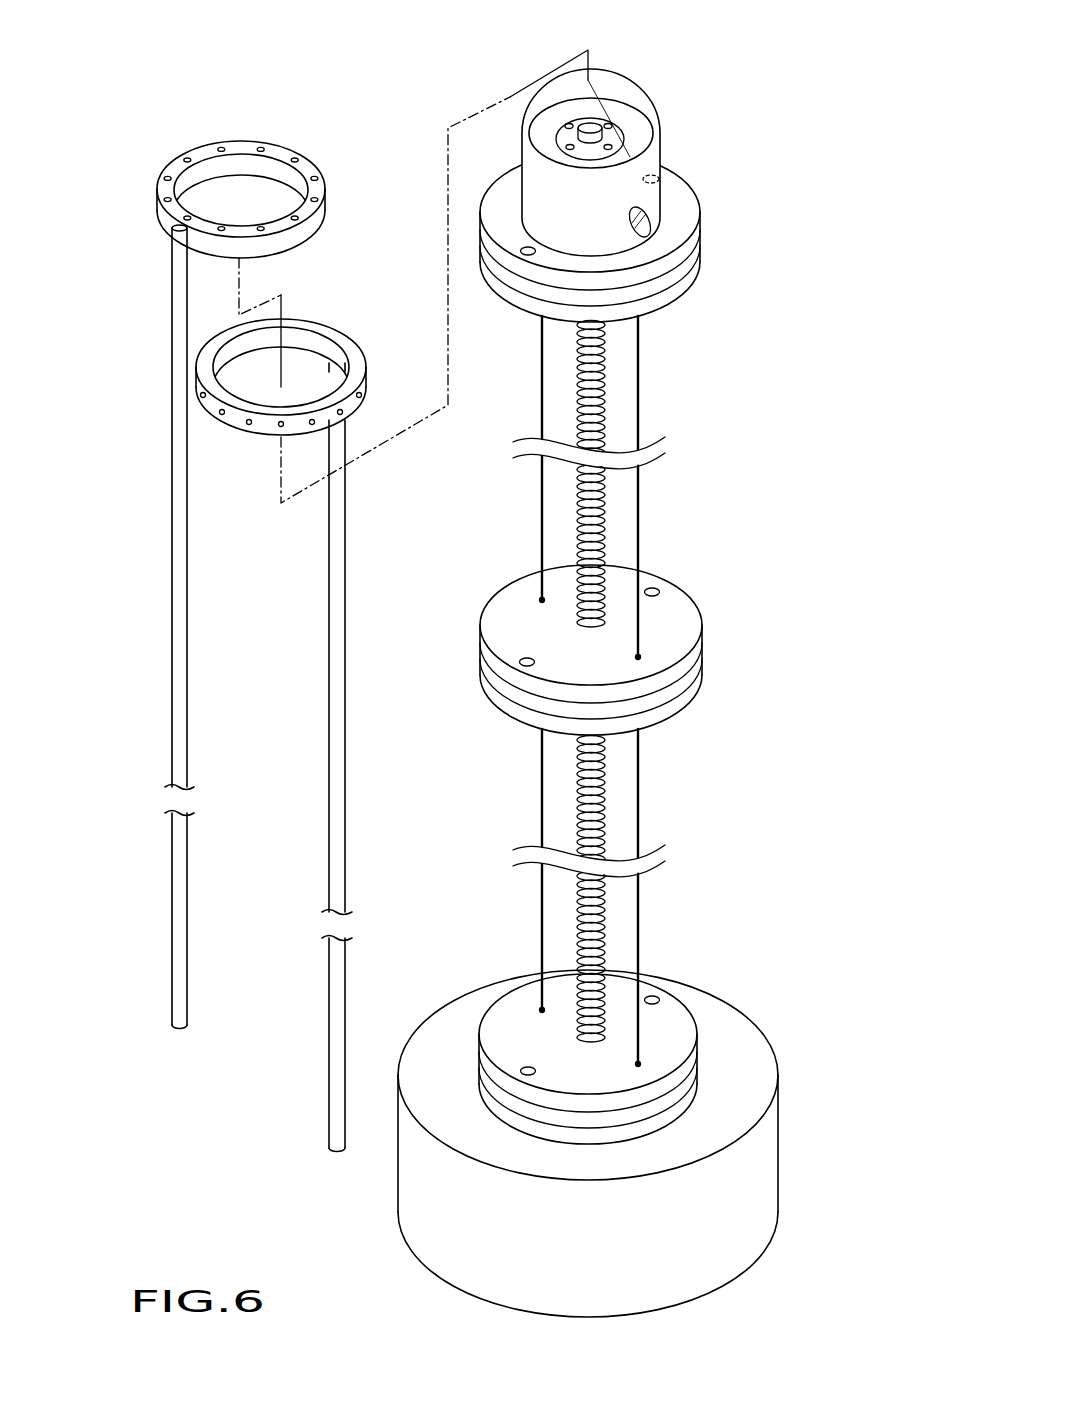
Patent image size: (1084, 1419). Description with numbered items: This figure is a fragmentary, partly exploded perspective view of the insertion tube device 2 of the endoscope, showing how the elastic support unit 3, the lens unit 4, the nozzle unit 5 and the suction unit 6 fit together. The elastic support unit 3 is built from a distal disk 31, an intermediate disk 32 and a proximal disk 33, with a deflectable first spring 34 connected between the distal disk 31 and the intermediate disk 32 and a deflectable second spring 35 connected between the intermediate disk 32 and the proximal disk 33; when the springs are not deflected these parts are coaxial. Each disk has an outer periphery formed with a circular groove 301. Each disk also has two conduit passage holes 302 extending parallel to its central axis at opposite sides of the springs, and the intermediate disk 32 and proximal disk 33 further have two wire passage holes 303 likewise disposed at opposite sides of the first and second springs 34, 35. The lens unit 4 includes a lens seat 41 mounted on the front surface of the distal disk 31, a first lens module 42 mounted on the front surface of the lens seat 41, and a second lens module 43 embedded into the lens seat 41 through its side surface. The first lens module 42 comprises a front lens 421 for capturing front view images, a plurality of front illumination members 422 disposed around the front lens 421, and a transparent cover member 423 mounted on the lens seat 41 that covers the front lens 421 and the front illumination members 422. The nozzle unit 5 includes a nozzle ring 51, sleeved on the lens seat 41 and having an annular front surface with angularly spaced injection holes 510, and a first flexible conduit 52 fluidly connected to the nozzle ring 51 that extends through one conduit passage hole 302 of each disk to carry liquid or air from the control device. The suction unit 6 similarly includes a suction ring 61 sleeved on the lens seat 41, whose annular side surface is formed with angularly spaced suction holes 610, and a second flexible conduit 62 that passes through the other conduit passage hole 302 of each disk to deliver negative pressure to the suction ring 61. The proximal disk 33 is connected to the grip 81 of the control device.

The insertion tube device 2 is at (148, 122).
The nozzle unit 5 is at (176, 682).
The nozzle ring 51 is at (205, 147).
The injection holes 510 is at (295, 160).
The first flexible conduit 52 is at (177, 610).
The suction unit 6 is at (330, 768).
The suction ring 61 is at (327, 325).
The suction holes 610 is at (281, 424).
The second flexible conduit 62 is at (332, 575).
The elastic support unit 3 is at (700, 1110).
The distal disk 31 is at (687, 215).
The intermediate disk 32 is at (678, 620).
The proximal disk 33 is at (684, 1029).
The circular groove 301 is at (683, 273).
The conduit passage holes 302 is at (656, 175).
The wire passage holes 303 is at (542, 600).
The first spring 34 is at (603, 497).
The second spring 35 is at (599, 925).
The lens unit 4 is at (622, 57).
The lens seat 41 is at (533, 197).
The first lens module 42 is at (638, 80).
The front lens 421 is at (583, 125).
The front illumination members 422 is at (570, 147).
The transparent cover member 423 is at (600, 77).
The second lens module 43 is at (647, 208).
The grip 81 is at (617, 1276).